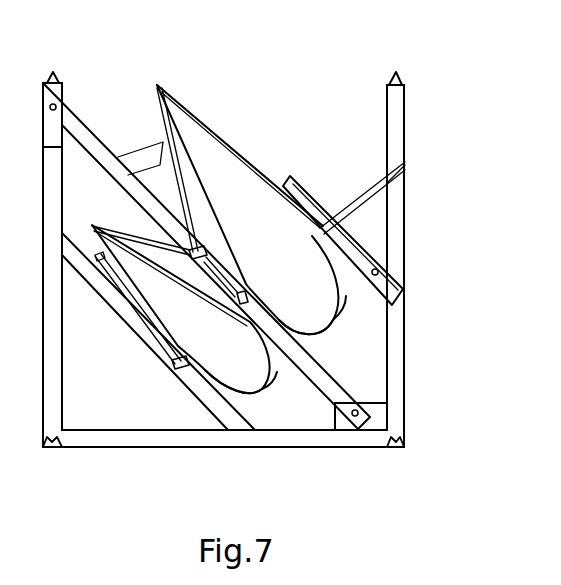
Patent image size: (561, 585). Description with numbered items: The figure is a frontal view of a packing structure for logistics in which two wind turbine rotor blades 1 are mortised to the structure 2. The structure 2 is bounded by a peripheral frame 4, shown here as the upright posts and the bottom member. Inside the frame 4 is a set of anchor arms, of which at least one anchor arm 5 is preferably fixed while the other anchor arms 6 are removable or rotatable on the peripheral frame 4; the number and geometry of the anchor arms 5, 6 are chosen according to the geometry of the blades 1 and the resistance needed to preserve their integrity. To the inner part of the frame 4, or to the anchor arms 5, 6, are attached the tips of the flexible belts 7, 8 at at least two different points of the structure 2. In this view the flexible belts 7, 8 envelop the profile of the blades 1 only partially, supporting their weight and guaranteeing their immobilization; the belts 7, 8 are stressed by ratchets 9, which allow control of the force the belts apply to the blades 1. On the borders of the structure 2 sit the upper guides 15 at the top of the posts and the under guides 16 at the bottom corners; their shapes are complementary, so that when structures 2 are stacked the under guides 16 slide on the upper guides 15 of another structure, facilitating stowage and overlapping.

The wind turbine rotor blade 1 is at (237, 188).
The structure 2 is at (229, 88).
The peripheral frame 4 is at (404, 356).
The fixed anchor arm 5 is at (120, 298).
The removable anchor arm 6 is at (302, 198).
The flexible belt 7 is at (262, 387).
The flexible belt 8 is at (322, 334).
The ratchet 9 is at (180, 250).
The upper guide 15 is at (58, 82).
The under guide 16 is at (52, 440).